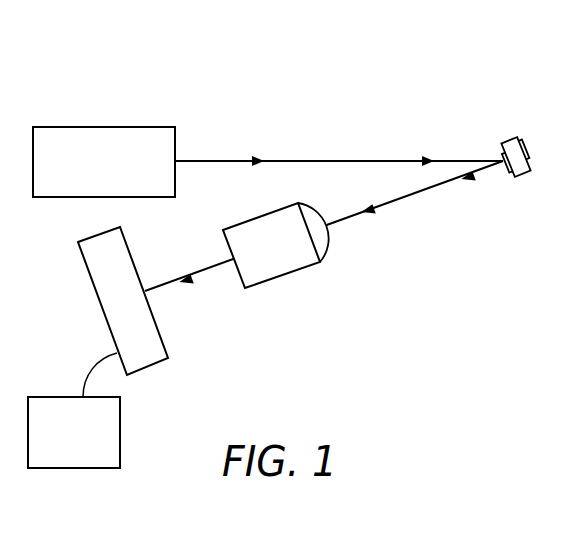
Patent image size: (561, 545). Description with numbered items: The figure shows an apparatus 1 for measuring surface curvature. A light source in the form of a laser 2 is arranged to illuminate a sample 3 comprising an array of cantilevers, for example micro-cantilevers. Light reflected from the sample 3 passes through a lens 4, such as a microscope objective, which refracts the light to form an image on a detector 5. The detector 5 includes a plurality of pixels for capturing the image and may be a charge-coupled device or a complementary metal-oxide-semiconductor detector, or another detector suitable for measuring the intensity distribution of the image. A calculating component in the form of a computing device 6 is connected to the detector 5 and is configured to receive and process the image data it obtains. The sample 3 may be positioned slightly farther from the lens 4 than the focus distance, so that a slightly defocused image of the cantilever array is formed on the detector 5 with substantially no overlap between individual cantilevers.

The apparatus for measuring surface curvature 1 is at (194, 96).
The laser 2 is at (46, 127).
The sample 3 is at (509, 138).
The lens 4 is at (265, 282).
The detector 5 is at (85, 267).
The computing device 6 is at (120, 407).